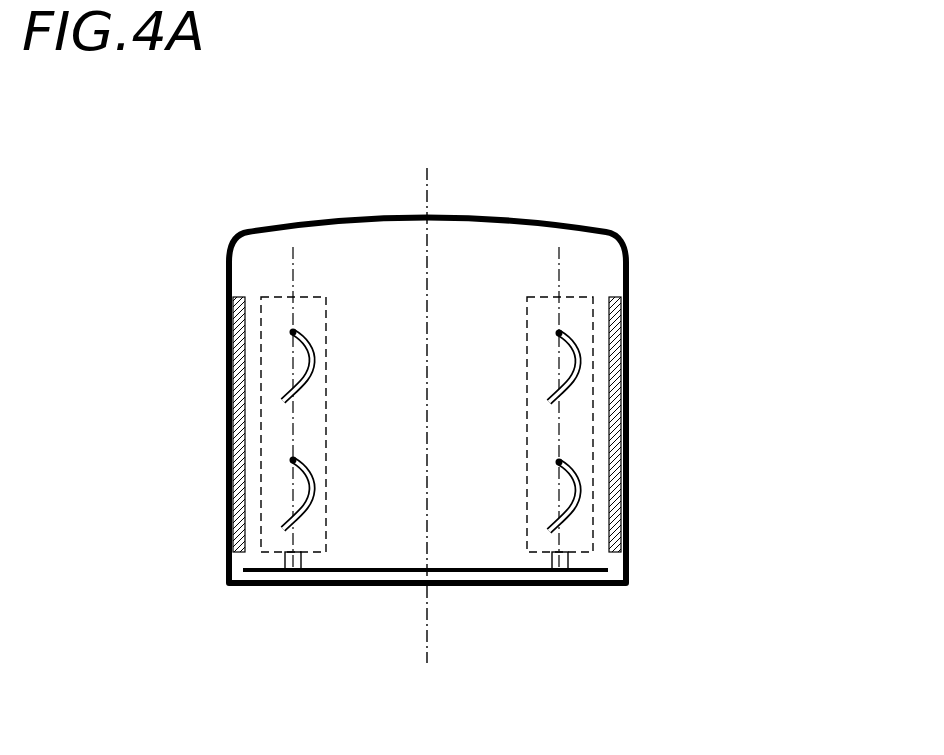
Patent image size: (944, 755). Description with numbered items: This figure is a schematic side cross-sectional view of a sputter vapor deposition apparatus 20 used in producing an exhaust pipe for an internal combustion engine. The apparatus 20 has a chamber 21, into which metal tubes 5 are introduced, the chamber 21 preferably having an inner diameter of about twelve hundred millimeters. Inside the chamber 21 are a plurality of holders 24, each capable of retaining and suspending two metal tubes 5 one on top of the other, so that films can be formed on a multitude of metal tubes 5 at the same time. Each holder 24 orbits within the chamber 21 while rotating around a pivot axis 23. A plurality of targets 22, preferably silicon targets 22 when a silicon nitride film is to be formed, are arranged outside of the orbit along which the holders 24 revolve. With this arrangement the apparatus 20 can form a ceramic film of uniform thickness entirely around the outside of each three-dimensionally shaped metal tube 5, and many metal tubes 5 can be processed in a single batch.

The sputter vapor deposition apparatus 20 is at (754, 176).
The chamber 21 is at (272, 228).
The targets 22 is at (227, 388).
The pivot axis 23 is at (571, 562).
The holders 24 is at (307, 297).
The metal tube 5 is at (303, 352).